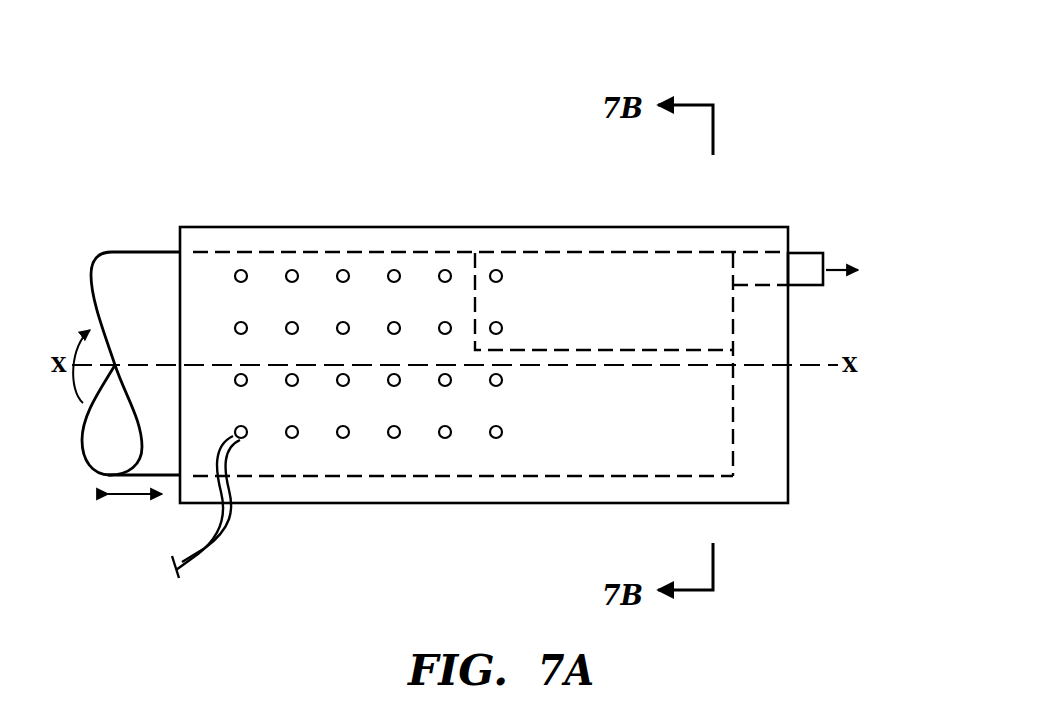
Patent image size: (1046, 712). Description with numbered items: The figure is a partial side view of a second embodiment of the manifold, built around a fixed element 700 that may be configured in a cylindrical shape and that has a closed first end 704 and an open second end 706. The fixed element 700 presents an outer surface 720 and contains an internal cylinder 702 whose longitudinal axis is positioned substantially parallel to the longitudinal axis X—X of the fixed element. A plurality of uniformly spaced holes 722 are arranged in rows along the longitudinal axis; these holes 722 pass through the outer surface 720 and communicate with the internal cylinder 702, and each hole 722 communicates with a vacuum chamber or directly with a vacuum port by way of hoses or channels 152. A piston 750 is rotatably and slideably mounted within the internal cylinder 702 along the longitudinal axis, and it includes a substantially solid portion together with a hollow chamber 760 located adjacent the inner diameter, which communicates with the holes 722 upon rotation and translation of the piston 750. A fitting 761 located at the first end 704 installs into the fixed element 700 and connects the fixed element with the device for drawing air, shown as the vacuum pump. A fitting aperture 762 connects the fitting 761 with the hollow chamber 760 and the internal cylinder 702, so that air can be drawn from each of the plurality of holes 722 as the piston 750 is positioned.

The fixed element 700 is at (521, 104).
The internal cylinder 702 is at (392, 478).
The first end 704 is at (789, 445).
The second end 706 is at (178, 307).
The outer surface 720 is at (295, 237).
The holes 722 is at (394, 271).
The piston 750 is at (118, 275).
The hollow chamber 760 is at (618, 272).
The fitting 761 is at (807, 268).
The fitting aperture 762 is at (757, 251).
The hoses or channels 152 is at (232, 512).